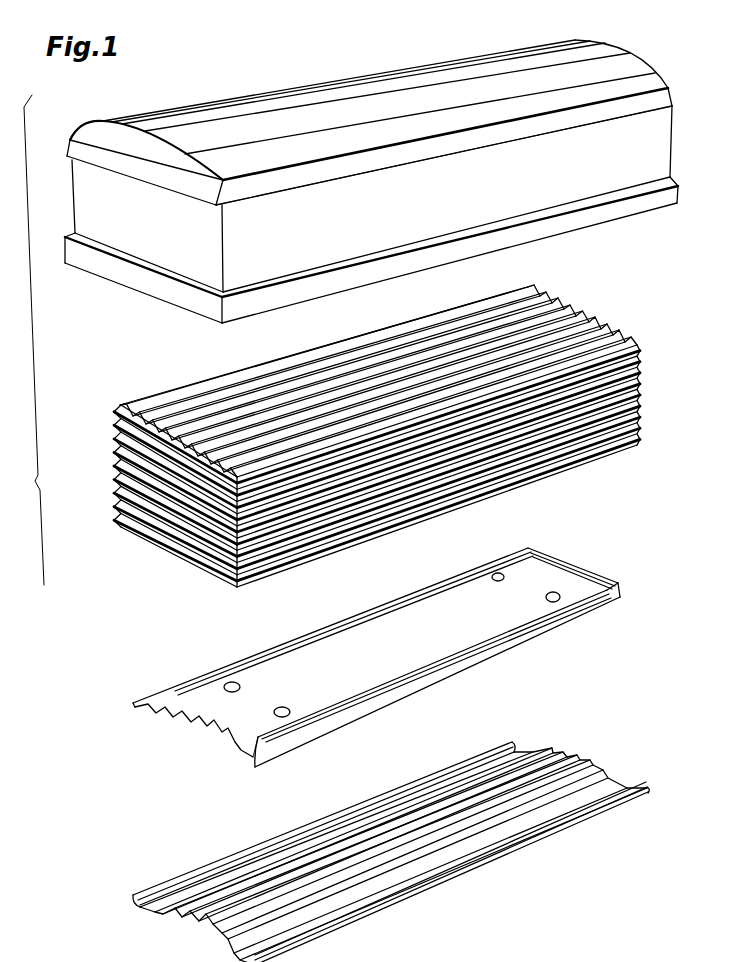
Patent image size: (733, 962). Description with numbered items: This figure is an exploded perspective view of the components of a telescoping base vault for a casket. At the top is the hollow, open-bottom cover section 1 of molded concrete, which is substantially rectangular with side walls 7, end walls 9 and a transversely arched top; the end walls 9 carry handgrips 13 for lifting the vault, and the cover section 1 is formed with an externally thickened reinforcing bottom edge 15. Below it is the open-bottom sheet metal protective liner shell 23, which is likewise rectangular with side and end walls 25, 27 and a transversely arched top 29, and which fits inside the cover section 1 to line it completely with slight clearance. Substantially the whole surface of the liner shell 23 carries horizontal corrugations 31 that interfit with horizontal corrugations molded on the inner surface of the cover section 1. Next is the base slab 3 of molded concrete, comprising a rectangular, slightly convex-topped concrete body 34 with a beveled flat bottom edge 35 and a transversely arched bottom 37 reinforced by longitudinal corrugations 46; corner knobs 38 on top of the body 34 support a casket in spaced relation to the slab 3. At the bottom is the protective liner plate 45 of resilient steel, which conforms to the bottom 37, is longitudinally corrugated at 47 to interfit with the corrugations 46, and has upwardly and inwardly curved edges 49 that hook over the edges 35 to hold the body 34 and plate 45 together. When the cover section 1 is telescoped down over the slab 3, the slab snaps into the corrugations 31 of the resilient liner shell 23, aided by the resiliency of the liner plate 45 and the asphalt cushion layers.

The cover section 1 is at (335, 68).
The side walls 7 is at (600, 177).
The end walls 9 is at (192, 258).
The handgrips 13 is at (150, 178).
The reinforcing bottom edge 15 is at (140, 283).
The protective liner shell 23 is at (165, 379).
The side walls 25 is at (374, 505).
The end walls 27 is at (185, 535).
The transversely arched top 29 is at (572, 311).
The horizontal corrugations 31 is at (116, 443).
The base slab 3 is at (293, 630).
The concrete body 34 is at (314, 704).
The beveled flat bottom edge 35 is at (150, 702).
The transversely arched bottom 37 is at (197, 720).
The corner knobs 38 is at (547, 598).
The longitudinal corrugations 46 is at (208, 738).
The protective liner plate 45 is at (402, 770).
The corrugations 47 is at (217, 923).
The curved edges 49 is at (178, 880).